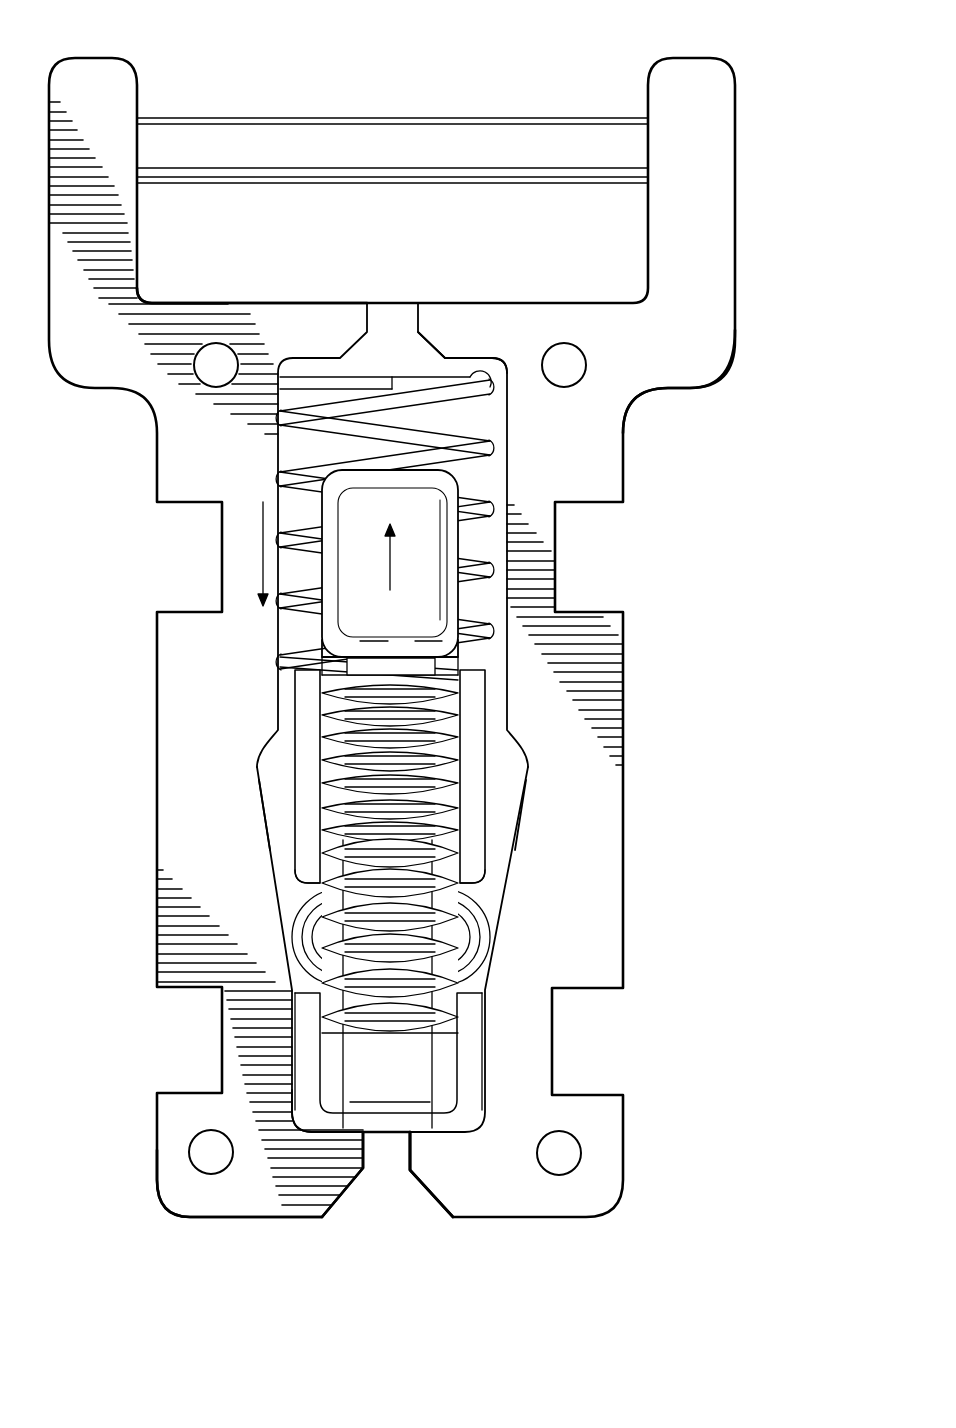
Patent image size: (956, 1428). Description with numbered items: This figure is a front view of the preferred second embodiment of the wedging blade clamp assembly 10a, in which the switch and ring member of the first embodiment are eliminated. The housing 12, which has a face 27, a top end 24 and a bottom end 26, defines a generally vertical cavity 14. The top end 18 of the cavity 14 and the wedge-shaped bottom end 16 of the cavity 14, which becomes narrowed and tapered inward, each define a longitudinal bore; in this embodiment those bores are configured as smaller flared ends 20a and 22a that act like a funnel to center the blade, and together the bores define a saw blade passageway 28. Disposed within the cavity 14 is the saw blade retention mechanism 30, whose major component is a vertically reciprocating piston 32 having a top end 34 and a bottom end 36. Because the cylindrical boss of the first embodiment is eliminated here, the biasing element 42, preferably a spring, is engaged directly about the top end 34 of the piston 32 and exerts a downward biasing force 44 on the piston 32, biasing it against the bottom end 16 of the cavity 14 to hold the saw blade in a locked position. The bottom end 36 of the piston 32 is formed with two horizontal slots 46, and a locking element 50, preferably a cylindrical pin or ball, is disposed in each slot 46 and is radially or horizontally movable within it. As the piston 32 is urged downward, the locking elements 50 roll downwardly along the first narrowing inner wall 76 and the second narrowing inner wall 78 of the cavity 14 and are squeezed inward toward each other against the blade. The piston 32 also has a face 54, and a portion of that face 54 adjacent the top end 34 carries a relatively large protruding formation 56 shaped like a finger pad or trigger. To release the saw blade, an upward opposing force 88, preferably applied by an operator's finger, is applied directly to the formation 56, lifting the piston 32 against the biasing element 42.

The blade clamp assembly 10a is at (775, 96).
The housing 12 is at (708, 302).
The cavity 14 is at (263, 753).
The bottom end 16 is at (305, 1100).
The top end 18 is at (455, 360).
The flared end 20a is at (414, 306).
The flared end 22a is at (425, 1192).
The top end 24 is at (322, 323).
The bottom end 26 is at (250, 1205).
The face 27 is at (665, 370).
The saw blade passageway 28 is at (400, 1150).
The saw blade retention mechanism 30 is at (475, 793).
The piston 32 is at (487, 747).
The top end 34 is at (440, 680).
The bottom end 36 is at (472, 1020).
The biasing element 42 is at (484, 447).
The downward biasing force 44 is at (262, 530).
The slot 46 is at (283, 892).
The locking element 50 is at (292, 916).
The face 54 is at (458, 662).
The formation 56 is at (420, 565).
The first narrowing inner wall 76 is at (273, 813).
The second narrowing inner wall 78 is at (510, 836).
The upward opposing force 88 is at (390, 560).